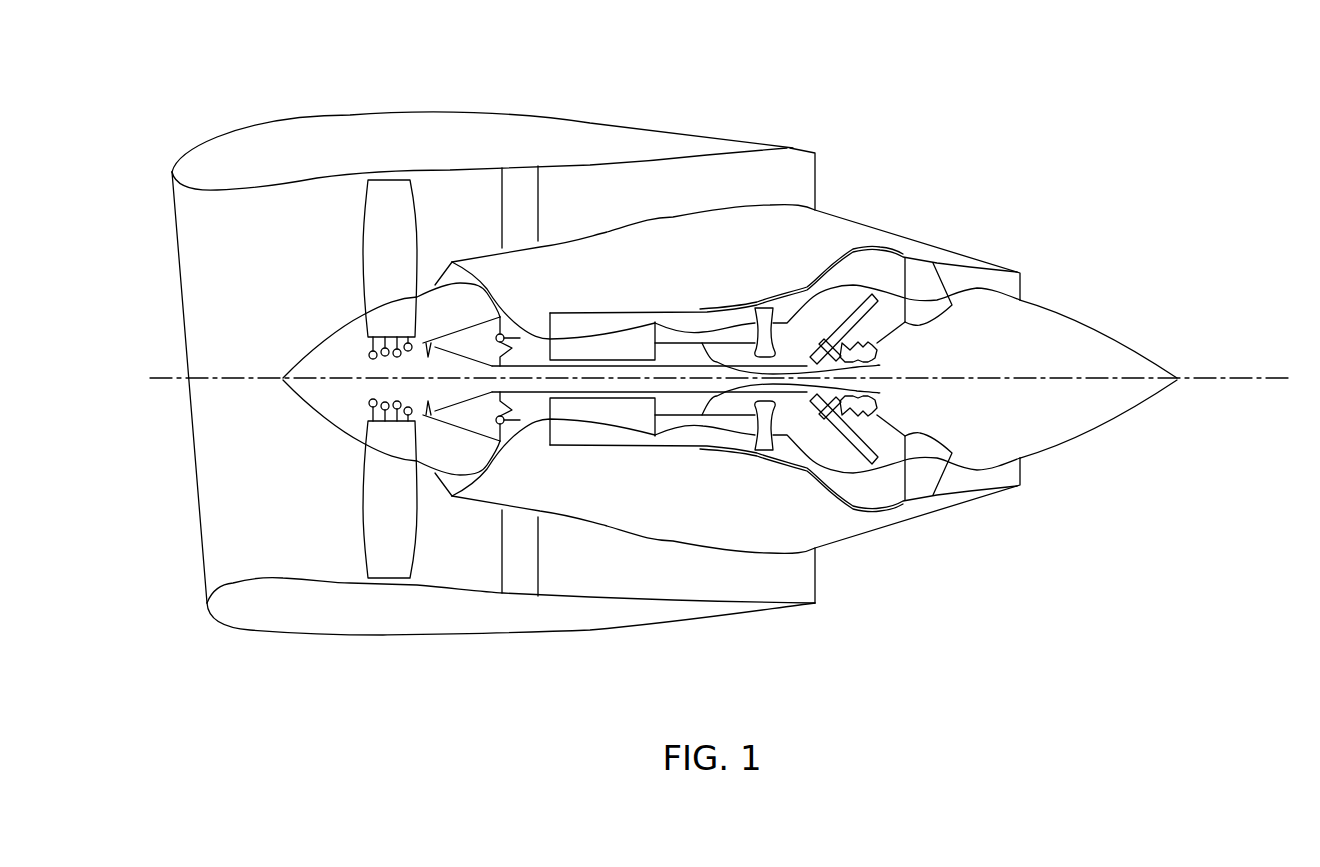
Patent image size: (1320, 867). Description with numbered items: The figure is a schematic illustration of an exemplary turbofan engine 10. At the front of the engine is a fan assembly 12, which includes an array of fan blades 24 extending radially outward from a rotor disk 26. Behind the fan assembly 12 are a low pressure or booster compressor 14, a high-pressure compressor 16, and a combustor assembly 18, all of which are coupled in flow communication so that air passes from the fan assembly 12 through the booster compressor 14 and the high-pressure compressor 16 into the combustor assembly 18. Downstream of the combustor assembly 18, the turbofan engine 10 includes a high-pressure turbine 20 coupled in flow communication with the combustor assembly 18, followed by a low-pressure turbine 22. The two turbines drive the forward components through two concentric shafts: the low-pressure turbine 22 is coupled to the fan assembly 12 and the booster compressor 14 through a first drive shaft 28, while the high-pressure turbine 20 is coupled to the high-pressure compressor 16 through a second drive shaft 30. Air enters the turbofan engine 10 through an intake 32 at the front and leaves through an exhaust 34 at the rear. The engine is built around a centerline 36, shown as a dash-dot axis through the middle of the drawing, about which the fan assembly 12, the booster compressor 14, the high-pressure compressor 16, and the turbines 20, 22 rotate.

The turbofan engine 10 is at (664, 333).
The fan assembly 12 is at (344, 379).
The booster compressor 14 is at (727, 364).
The high-pressure compressor 16 is at (603, 344).
The combustor assembly 18 is at (705, 331).
The high-pressure turbine 20 is at (790, 336).
The low-pressure turbine 22 is at (860, 347).
The fan blades 24 is at (378, 263).
The rotor disk 26 is at (330, 368).
The first drive shaft 28 is at (533, 367).
The second drive shaft 30 is at (878, 365).
The intake 32 is at (427, 373).
The exhaust 34 is at (1098, 347).
The centerline 36 is at (1223, 378).